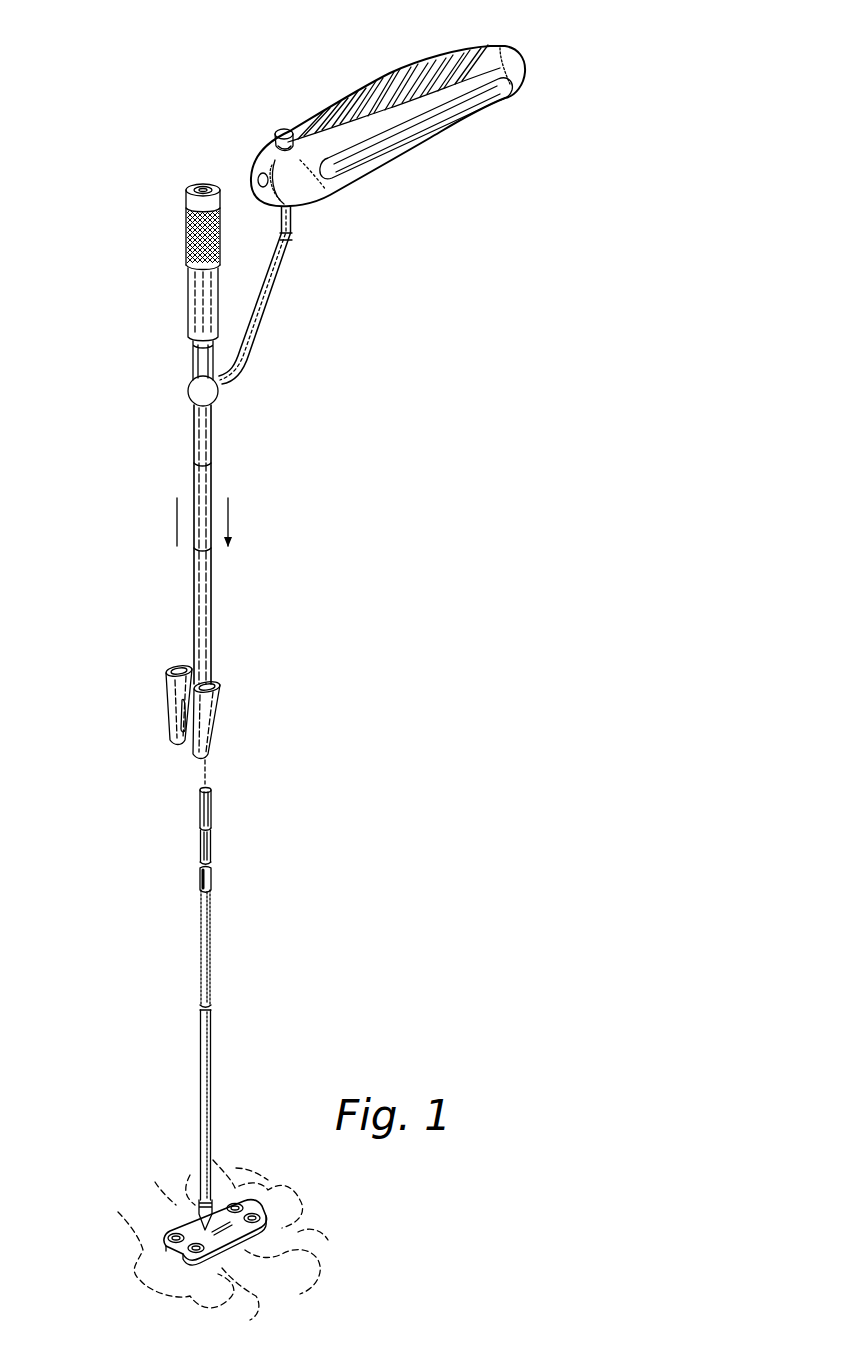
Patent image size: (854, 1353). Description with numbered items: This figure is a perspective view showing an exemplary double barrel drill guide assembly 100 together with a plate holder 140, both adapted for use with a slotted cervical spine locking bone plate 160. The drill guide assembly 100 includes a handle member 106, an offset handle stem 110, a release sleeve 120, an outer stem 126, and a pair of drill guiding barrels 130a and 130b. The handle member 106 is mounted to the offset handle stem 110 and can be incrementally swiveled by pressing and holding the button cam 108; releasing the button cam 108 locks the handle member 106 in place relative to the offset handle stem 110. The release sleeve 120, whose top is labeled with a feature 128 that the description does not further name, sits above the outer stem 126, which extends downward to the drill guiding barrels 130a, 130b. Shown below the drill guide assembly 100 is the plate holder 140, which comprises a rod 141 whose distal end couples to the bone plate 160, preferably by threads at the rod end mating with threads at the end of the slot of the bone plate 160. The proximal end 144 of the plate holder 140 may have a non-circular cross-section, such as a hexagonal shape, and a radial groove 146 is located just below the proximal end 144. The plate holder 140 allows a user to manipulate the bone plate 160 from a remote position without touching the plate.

The double barrel drill guide assembly 100 is at (96, 320).
The handle member 106 is at (419, 65).
The button cam 108 is at (270, 137).
The offset handle stem 110 is at (277, 302).
The release sleeve 120 is at (182, 232).
The outer stem 126 is at (216, 451).
The drive socket 128 is at (196, 184).
The drill guiding barrel 130a is at (163, 672).
The drill guiding barrel 130b is at (219, 676).
The plate holder 140 is at (128, 964).
The rod 141 is at (214, 1038).
The proximal end 144 is at (219, 793).
The radial groove 146 is at (221, 862).
The bone plate 160 is at (181, 1223).